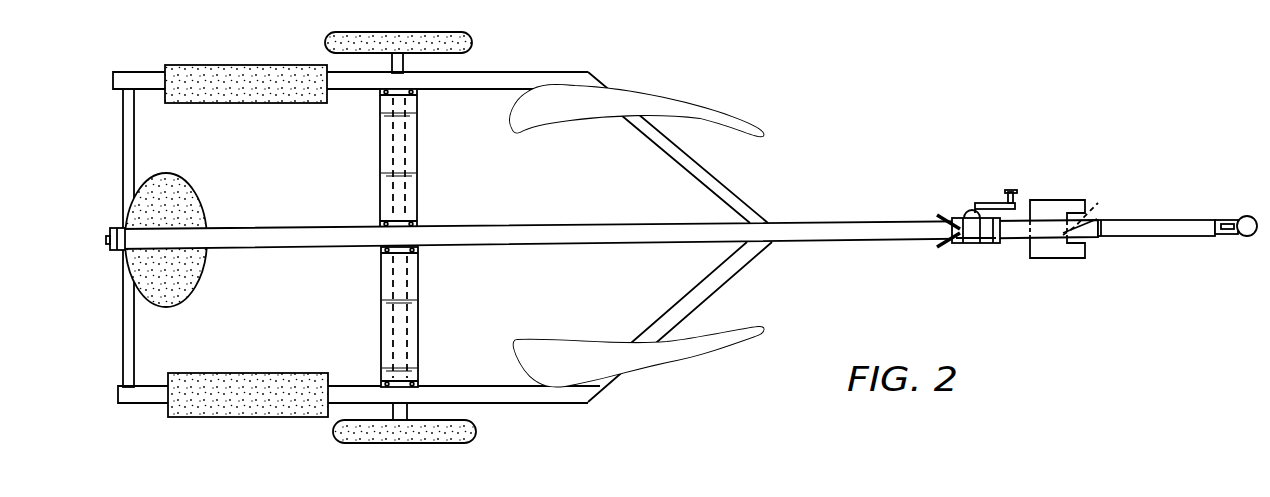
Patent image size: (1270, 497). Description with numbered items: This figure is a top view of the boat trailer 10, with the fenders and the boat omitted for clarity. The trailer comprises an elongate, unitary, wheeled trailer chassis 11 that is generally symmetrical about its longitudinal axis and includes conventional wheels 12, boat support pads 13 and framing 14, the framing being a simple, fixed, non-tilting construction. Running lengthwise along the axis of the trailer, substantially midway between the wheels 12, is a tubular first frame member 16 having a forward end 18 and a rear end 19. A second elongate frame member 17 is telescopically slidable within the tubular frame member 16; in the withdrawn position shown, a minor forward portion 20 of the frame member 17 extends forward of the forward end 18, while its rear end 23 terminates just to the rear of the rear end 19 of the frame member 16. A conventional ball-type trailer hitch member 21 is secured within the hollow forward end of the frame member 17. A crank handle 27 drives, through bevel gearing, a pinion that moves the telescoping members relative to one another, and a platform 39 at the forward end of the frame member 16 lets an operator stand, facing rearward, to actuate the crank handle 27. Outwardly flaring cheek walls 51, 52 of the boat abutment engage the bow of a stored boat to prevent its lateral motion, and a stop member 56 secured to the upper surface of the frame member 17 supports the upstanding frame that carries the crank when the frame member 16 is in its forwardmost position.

The boat trailer 10 is at (788, 197).
The wheeled trailer chassis 11 is at (694, 184).
The wheels 12 is at (471, 42).
The boat support pads 13 is at (202, 373).
The framing 14 is at (123, 186).
The first elongate frame member 16 is at (880, 234).
The second elongate frame member 17 is at (1120, 237).
The forward end 18 is at (1104, 202).
The rear end 19 is at (110, 252).
The forward portion 20 is at (1198, 208).
The trailer hitch member 21 is at (1240, 236).
The rear end 23 is at (107, 240).
The crank handle 27 is at (985, 205).
The platform 39 is at (1055, 205).
The cheek wall 51 is at (946, 213).
The cheek wall 52 is at (955, 243).
The stop member 56 is at (1015, 232).